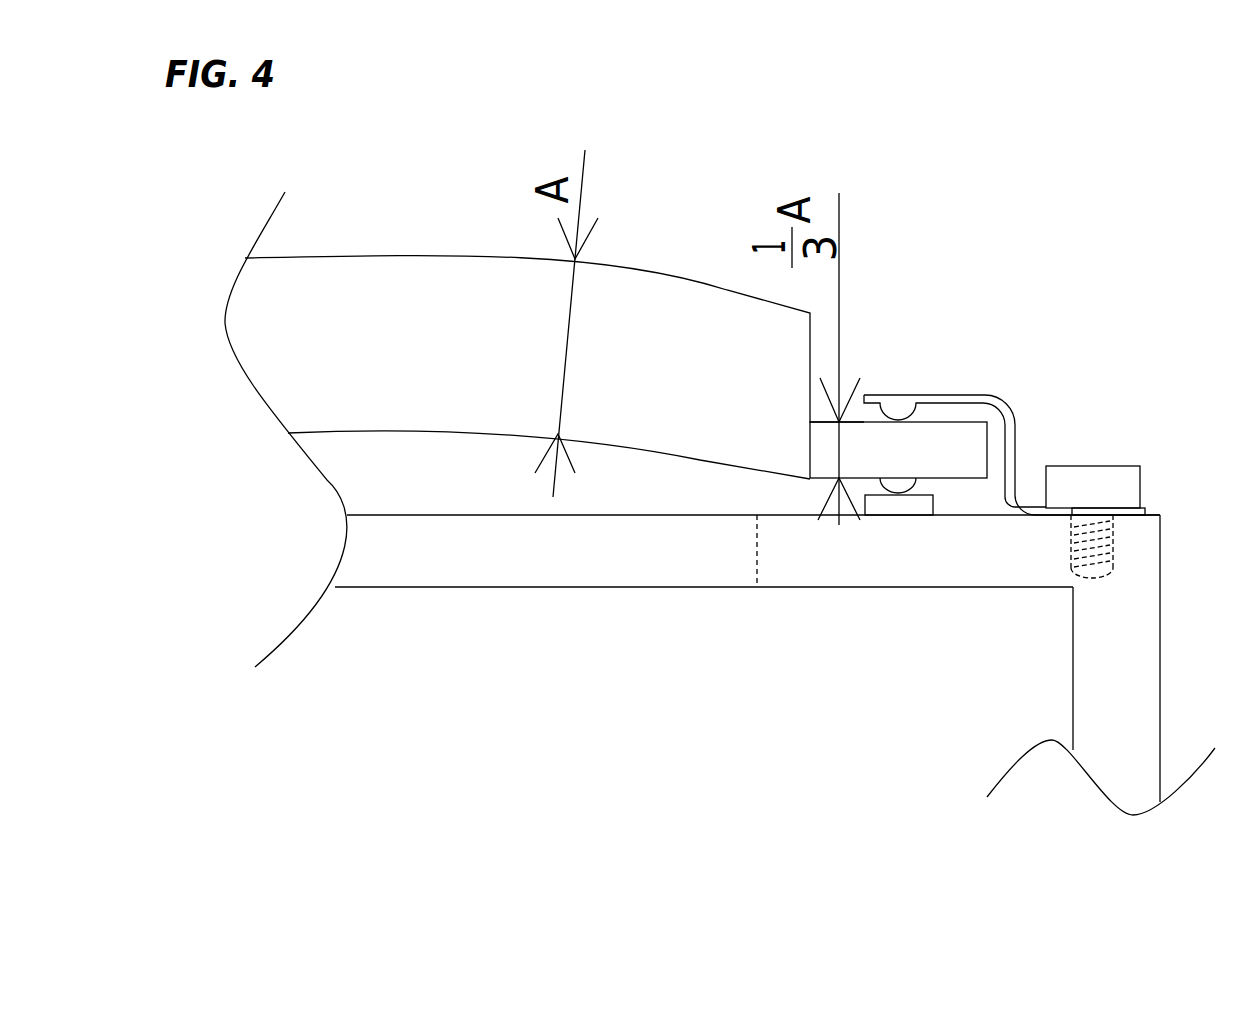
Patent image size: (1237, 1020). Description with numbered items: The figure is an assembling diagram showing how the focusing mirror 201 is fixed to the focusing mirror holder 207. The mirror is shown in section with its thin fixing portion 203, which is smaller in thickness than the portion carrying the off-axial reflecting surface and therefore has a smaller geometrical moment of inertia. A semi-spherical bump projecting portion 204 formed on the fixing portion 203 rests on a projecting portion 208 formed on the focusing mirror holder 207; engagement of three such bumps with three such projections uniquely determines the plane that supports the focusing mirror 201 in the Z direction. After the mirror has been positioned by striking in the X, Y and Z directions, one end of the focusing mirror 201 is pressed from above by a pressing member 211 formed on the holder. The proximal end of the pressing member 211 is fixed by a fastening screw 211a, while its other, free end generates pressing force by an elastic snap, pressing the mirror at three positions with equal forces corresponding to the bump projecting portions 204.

The focusing mirror 201 is at (420, 258).
The fixing portion 203 is at (955, 441).
The bump projecting portion 204 is at (900, 488).
The focusing mirror holder 207 is at (527, 588).
The projecting portion 208 is at (912, 505).
The pressing member 211 is at (980, 393).
The fastening screw 211a is at (1113, 482).